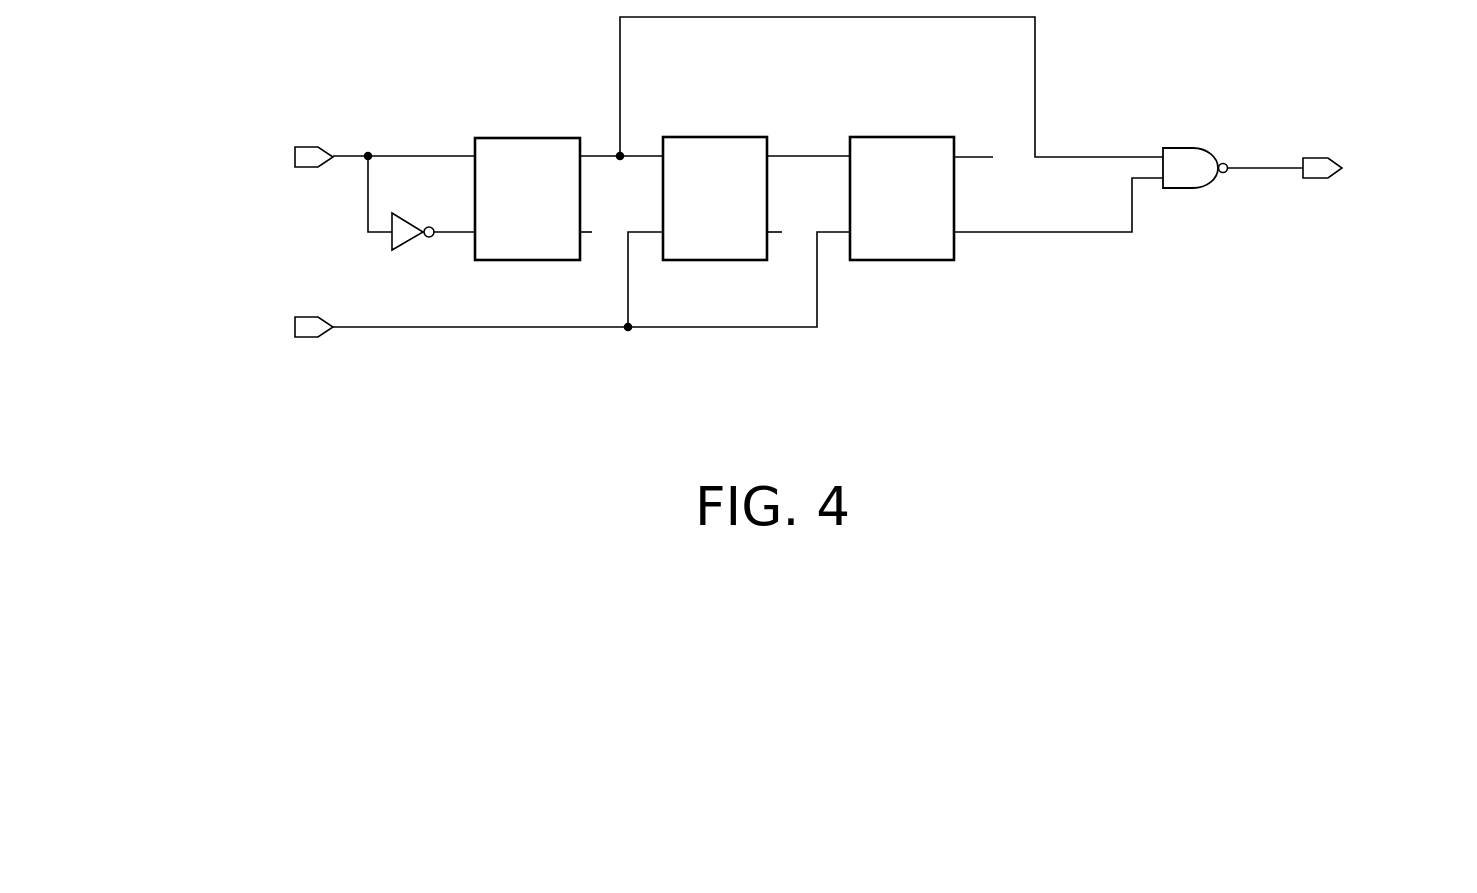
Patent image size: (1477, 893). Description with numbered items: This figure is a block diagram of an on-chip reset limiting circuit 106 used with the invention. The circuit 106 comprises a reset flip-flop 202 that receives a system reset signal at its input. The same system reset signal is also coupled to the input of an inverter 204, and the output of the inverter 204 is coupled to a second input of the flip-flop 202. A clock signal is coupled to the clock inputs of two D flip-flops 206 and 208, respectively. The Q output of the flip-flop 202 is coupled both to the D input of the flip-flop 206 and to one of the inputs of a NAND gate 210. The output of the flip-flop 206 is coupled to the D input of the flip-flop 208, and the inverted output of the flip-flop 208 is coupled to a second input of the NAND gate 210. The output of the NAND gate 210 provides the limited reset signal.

The on-chip reset limiting circuit 106 is at (767, 412).
The reset flip-flop 202 is at (522, 138).
The inverter 204 is at (405, 250).
The D flip-flop 206 is at (710, 137).
The D flip-flop 208 is at (895, 137).
The NAND gate 210 is at (1190, 148).